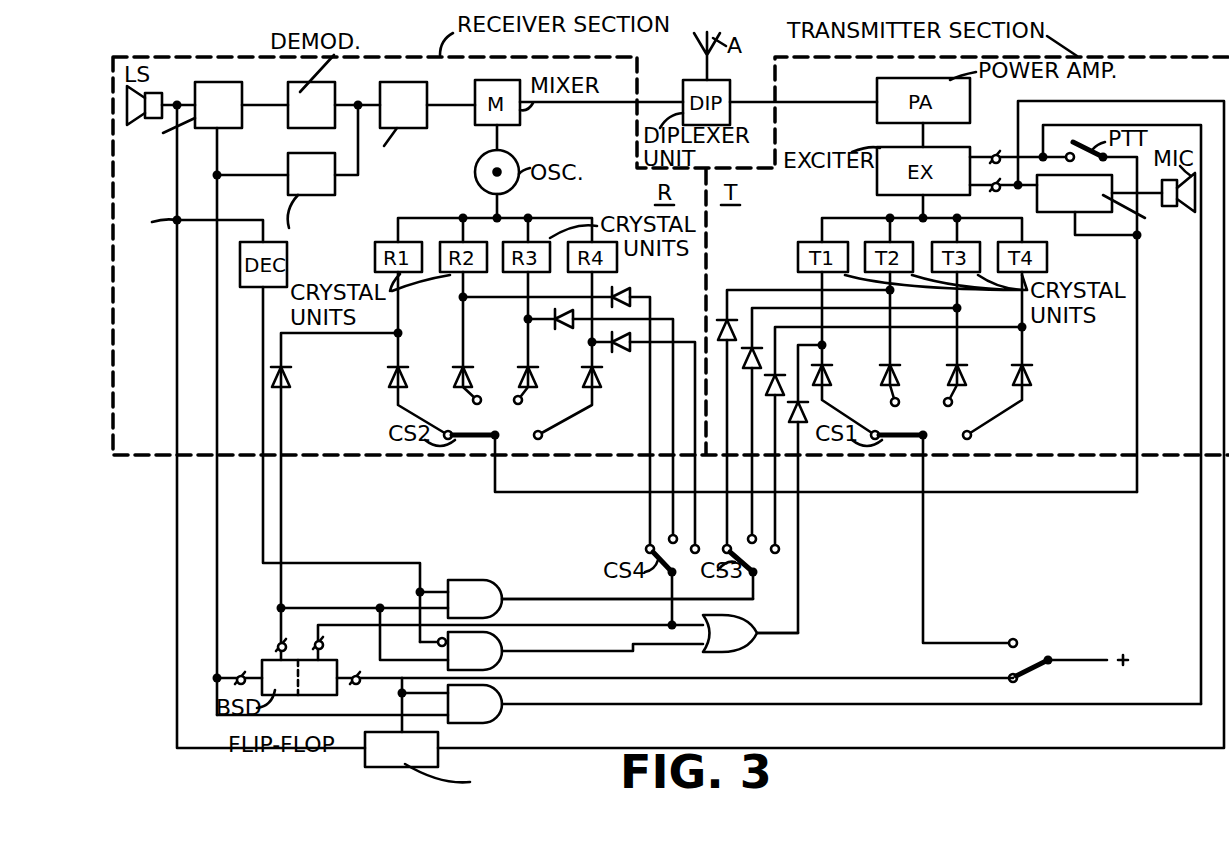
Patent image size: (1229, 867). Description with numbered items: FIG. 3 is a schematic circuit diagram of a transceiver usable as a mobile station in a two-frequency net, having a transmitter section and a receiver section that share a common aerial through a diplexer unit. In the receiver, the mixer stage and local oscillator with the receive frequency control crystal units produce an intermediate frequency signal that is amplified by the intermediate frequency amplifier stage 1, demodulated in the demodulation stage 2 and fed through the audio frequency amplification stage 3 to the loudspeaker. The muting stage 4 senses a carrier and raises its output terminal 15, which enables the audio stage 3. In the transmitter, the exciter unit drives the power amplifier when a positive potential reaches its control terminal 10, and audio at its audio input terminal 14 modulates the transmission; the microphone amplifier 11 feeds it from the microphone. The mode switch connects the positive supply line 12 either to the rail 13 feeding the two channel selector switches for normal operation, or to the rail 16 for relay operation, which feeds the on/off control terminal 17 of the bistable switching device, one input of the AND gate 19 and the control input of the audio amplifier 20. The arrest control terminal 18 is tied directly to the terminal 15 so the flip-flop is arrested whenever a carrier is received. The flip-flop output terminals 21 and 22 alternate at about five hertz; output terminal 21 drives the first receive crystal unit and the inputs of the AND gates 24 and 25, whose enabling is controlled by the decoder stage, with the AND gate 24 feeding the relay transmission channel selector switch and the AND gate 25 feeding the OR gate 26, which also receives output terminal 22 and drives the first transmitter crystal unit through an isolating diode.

The intermediate frequency amplifier stage 1 is at (427, 90).
The demodulation stage 2 is at (335, 90).
The audio frequency amplification stage 3 is at (242, 90).
The muting stage 4 is at (288, 168).
The control terminal of the exciter unit 10 is at (996, 152).
The microphone amplifier 11 is at (1098, 212).
The positive supply line 12 is at (1042, 662).
The rail 13 is at (923, 574).
The audio input terminal of the exciter unit 14 is at (996, 188).
The output terminal of the muting stage 15 is at (194, 225).
The rail 16 is at (822, 678).
The on/off control terminal 17 is at (357, 676).
The arrest control terminal 18 is at (238, 676).
The AND gate 19 is at (496, 717).
The audio amplifier 20 is at (365, 765).
The output terminal of the bistable switching device 21 is at (279, 643).
The output terminal of the bistable switching device 22 is at (320, 642).
The AND gate 24 is at (496, 588).
The AND gate 25 is at (496, 662).
The OR gate 26 is at (693, 655).